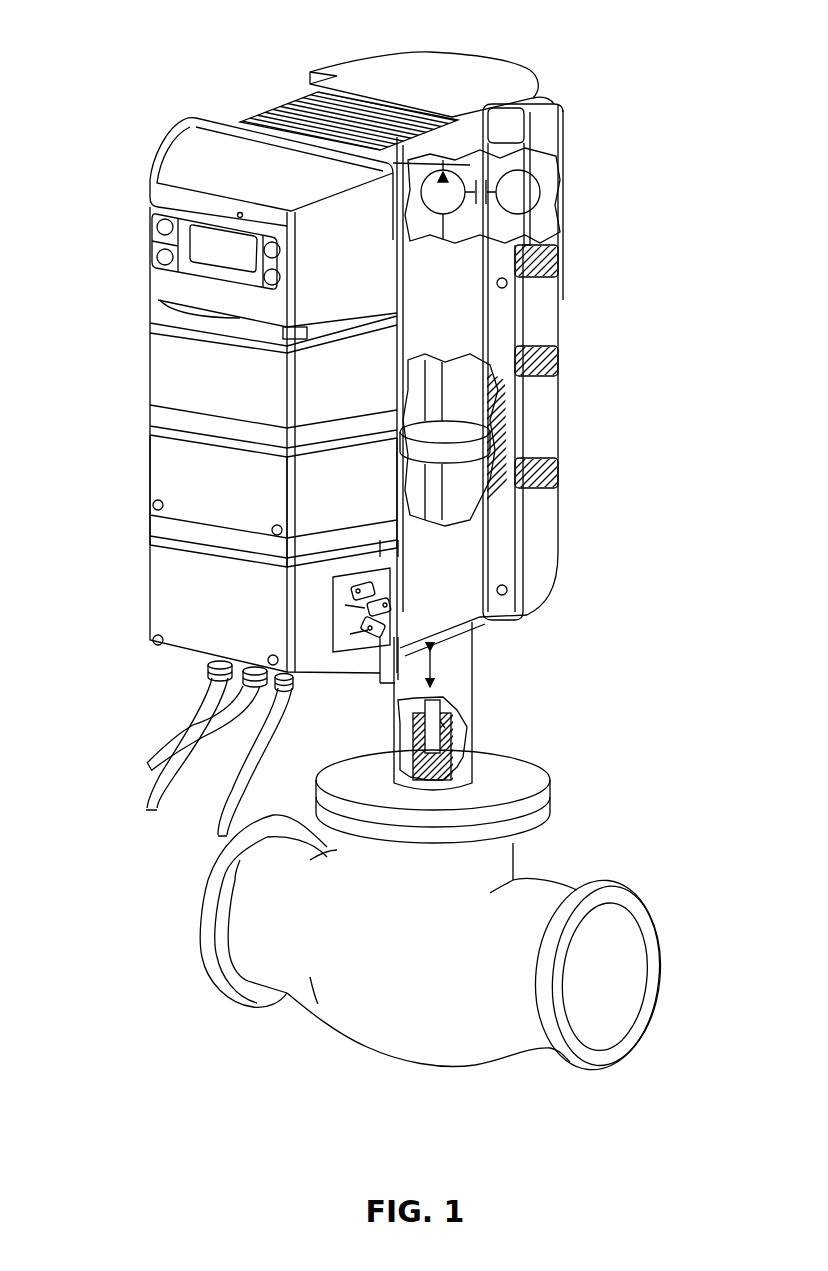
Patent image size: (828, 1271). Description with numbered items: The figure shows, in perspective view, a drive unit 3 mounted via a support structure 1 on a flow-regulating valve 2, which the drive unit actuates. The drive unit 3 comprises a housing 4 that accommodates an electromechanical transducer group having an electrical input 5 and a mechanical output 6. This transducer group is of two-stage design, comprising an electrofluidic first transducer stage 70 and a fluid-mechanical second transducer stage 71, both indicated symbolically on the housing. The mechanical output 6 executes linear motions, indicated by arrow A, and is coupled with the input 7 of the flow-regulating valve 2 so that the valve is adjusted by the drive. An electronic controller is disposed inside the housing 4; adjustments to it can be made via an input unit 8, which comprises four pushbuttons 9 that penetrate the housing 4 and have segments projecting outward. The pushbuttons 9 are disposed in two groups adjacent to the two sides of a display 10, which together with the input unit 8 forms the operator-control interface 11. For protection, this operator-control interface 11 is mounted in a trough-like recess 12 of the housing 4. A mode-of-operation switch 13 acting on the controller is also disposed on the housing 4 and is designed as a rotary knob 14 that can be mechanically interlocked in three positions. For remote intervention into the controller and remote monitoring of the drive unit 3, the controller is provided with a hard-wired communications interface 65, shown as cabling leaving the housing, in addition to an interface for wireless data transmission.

The support structure 1 is at (457, 641).
The flow-regulating valve 2 is at (392, 1005).
The drive unit 3 is at (522, 52).
The housing 4 is at (165, 452).
The electrical input 5 is at (207, 717).
The mechanical output 6 is at (455, 728).
The input 7 is at (452, 768).
The input unit 8 is at (255, 298).
The pushbuttons 9 is at (273, 242).
The display 10 is at (212, 244).
The operator-control interface 11 is at (240, 215).
The trough-like recess 12 is at (155, 251).
The mode-of-operation switch 13 is at (343, 607).
The rotary knob 14 is at (382, 588).
The hard-wired communications interface 65 is at (223, 797).
The electrofluidic first transducer stage 70 is at (492, 215).
The fluid-mechanical second transducer stage 71 is at (466, 400).
The arrow A is at (437, 667).